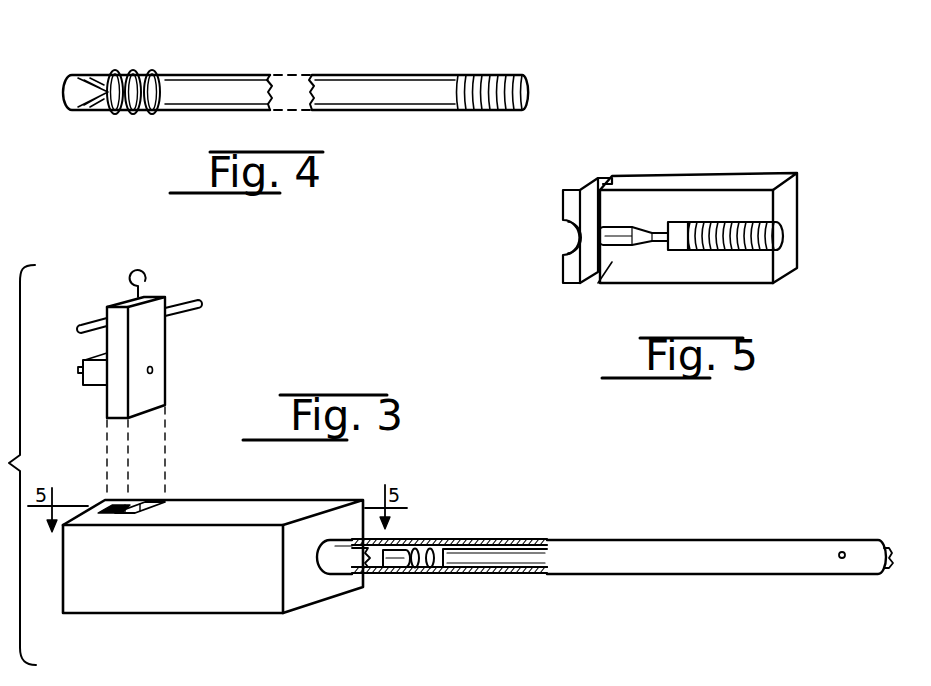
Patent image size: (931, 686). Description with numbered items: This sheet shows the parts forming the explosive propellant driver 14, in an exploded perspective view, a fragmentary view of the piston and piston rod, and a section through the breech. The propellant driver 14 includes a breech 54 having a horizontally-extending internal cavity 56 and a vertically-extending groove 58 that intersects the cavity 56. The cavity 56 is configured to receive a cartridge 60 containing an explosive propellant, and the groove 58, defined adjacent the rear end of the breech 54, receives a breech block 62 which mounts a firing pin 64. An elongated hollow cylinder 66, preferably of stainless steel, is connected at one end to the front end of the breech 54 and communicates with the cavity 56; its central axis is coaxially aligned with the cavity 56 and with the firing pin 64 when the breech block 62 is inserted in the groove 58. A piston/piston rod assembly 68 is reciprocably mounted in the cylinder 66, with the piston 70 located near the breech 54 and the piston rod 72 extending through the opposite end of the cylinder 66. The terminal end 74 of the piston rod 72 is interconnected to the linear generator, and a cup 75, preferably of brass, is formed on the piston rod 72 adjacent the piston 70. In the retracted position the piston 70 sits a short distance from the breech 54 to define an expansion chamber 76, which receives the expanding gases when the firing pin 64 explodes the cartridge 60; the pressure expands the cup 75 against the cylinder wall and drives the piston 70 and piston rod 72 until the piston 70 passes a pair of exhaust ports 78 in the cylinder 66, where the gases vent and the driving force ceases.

In FIG. 3, the propellant driver 14 is at (605, 564).
In FIG. 5, the breech 54 is at (798, 210).
In FIG. 3, the breech 54 is at (213, 603).
In FIG. 5, the internal cavity 56 is at (620, 255).
In FIG. 5, the groove 58 is at (604, 178).
In FIG. 3, the groove 58 is at (142, 500).
In FIG. 5, the cartridge 60 is at (625, 235).
In FIG. 3, the breech block 62 is at (160, 387).
In FIG. 3, the firing pin 64 is at (80, 369).
In FIG. 3, the cylinder 66 is at (508, 540).
In FIG. 4, the piston/piston rod assembly 68 is at (295, 98).
In FIG. 4, the piston 70 is at (138, 115).
In FIG. 3, the piston 70 is at (427, 564).
In FIG. 4, the piston rod 72 is at (403, 98).
In FIG. 3, the piston rod 72 is at (510, 568).
In FIG. 4, the terminal end 74 is at (478, 78).
In FIG. 3, the terminal end 74 is at (893, 556).
In FIG. 4, the cup 75 is at (73, 100).
In FIG. 3, the cup 75 is at (400, 563).
In FIG. 5, the expansion chamber 76 is at (783, 250).
In FIG. 3, the expansion chamber 76 is at (377, 574).
In FIG. 3, the exhaust ports 78 is at (842, 558).